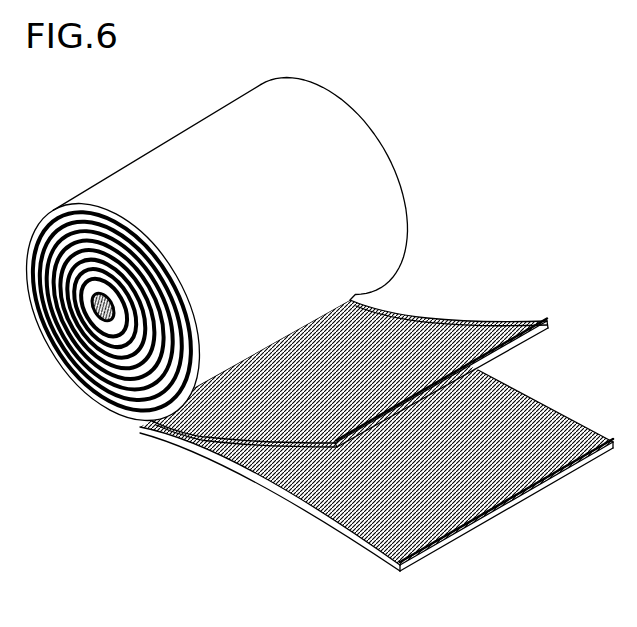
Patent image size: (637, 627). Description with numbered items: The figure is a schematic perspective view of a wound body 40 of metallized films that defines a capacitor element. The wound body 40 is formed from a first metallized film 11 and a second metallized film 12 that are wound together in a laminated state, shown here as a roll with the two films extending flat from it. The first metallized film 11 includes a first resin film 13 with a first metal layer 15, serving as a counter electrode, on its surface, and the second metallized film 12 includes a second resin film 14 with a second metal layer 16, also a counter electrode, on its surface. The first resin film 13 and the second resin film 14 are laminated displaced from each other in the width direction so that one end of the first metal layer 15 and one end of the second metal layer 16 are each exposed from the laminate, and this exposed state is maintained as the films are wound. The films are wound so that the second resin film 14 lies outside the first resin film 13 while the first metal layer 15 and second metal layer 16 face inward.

The wound body 40 is at (458, 127).
The first metallized film 11 is at (457, 225).
The first resin film 13 is at (423, 318).
The first metal layer 15 is at (485, 330).
The second metallized film 12 is at (182, 557).
The second resin film 14 is at (260, 477).
The second metal layer 16 is at (350, 483).